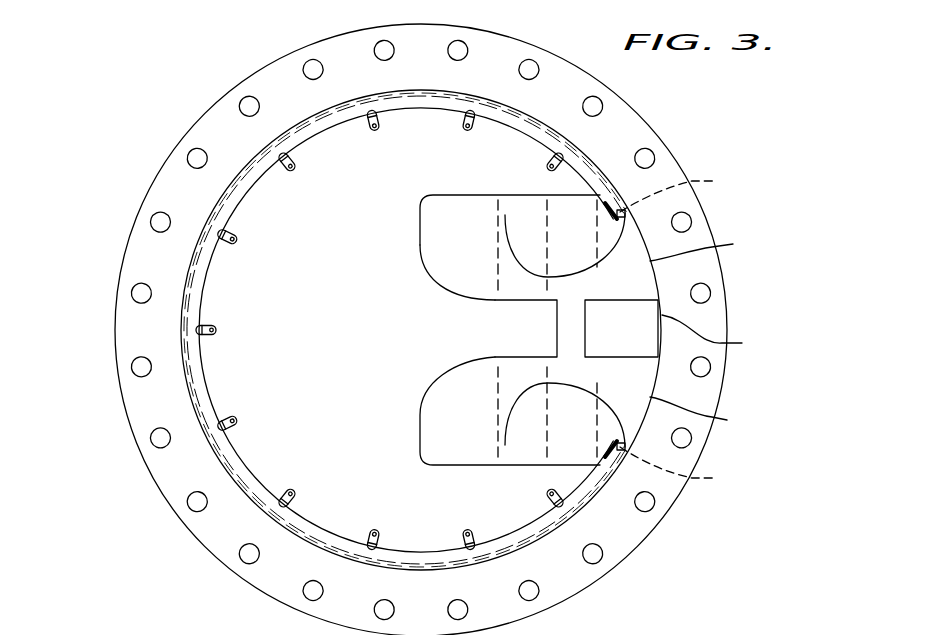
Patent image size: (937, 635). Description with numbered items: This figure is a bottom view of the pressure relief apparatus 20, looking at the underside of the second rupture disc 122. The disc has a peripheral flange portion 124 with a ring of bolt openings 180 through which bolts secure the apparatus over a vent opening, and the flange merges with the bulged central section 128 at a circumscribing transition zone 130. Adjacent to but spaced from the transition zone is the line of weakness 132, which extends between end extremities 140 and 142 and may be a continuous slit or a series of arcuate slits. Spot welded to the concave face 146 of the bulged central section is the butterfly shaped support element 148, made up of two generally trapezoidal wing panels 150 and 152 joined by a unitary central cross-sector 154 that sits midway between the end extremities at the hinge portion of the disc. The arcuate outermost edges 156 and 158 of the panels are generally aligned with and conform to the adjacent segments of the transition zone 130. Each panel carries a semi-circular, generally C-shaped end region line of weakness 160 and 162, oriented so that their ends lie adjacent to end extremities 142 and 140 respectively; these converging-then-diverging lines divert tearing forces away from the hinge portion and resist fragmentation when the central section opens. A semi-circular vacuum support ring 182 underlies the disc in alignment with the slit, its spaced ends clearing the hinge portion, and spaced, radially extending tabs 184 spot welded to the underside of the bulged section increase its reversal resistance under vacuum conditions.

The pressure relief apparatus 20 is at (655, 108).
The second rupture disc 122 is at (133, 224).
The peripheral flange portion 124 is at (178, 196).
The central section 128 is at (293, 210).
The transition zone 130 is at (721, 336).
The line of weakness 132 is at (245, 471).
The end extremity 140 is at (688, 191).
The end extremity 142 is at (687, 469).
The concave face 146 is at (412, 333).
The butterfly shaped support element 148 is at (421, 202).
The wing panel 150 is at (428, 411).
The wing panel 152 is at (426, 247).
The central cross-sector 154 is at (582, 322).
The arcuate outermost edge 156 is at (707, 416).
The arcuate outermost edge 158 is at (710, 247).
The end region line of weakness 160 is at (533, 390).
The end region line of weakness 162 is at (541, 275).
The openings 180 is at (536, 67).
The vacuum support ring 182 is at (203, 272).
The tabs 184 is at (212, 333).